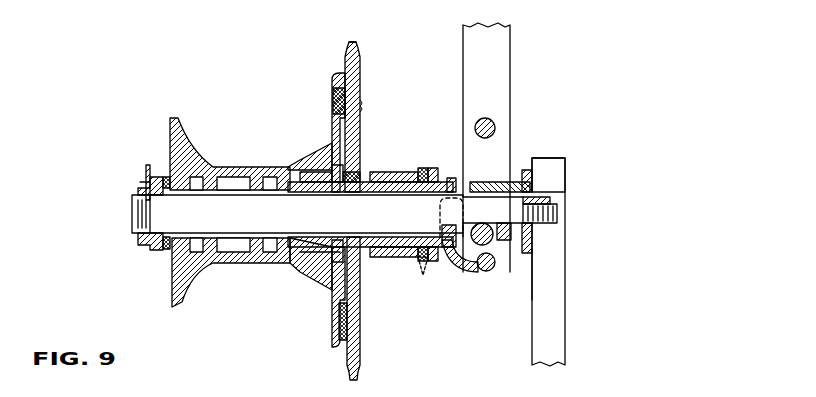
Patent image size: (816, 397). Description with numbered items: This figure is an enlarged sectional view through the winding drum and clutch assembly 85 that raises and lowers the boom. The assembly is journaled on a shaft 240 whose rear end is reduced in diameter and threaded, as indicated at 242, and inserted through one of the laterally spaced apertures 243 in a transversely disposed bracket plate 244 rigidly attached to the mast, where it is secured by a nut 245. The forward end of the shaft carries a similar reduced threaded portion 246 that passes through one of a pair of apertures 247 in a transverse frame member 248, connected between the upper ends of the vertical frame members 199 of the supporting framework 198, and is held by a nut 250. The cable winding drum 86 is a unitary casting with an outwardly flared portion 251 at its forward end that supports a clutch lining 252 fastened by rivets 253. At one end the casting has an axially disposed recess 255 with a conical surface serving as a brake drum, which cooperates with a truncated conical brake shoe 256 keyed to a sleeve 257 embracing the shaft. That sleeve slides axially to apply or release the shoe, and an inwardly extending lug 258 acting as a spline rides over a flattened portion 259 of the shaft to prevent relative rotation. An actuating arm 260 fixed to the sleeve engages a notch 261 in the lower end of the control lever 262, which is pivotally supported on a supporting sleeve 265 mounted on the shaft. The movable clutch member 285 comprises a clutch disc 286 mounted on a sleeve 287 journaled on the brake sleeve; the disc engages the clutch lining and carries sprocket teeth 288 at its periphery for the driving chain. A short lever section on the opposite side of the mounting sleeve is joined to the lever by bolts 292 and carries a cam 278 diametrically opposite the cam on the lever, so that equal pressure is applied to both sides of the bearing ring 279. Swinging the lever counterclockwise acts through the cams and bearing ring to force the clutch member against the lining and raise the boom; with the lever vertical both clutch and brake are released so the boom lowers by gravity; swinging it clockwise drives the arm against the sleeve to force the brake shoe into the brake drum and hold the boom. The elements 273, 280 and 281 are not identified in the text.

The winding drum and clutch assembly 85 is at (303, 94).
The cable winding drum 86 is at (224, 166).
The framework 198 is at (576, 299).
The vertical frame members 199 is at (558, 268).
The shaft 240 is at (275, 221).
The threaded end portion 242 is at (140, 222).
The apertures 243 is at (160, 203).
The bracket plate 244 is at (152, 176).
The nuts 245 is at (148, 188).
The threaded portion 246 is at (560, 209).
The apertures 247 is at (549, 175).
The frame member 248 is at (527, 170).
The nuts 250 is at (548, 197).
The outwardly flared portion 251 is at (336, 92).
The clutch lining 252 is at (358, 90).
The rivets 253 is at (336, 98).
The brake drum 255 is at (318, 163).
The brake shoe 256 is at (314, 268).
The sleeve 257 is at (340, 193).
The lug 258 is at (450, 224).
The flattened portion 259 is at (440, 236).
The actuating arm 260 is at (455, 272).
The notch 261 is at (500, 278).
The control lever 262 is at (505, 48).
The supporting sleeve 265 is at (485, 181).
The seal 273 is at (448, 180).
The cam 278 is at (440, 206).
The bearing ring 279 is at (430, 168).
The pin 280 is at (422, 278).
The seal 281 is at (166, 252).
The movable clutch member 285 is at (386, 121).
The clutch disc 286 is at (365, 106).
The sleeve 287 is at (374, 181).
The sprocket teeth 288 is at (358, 50).
The bolts 292 is at (492, 124).